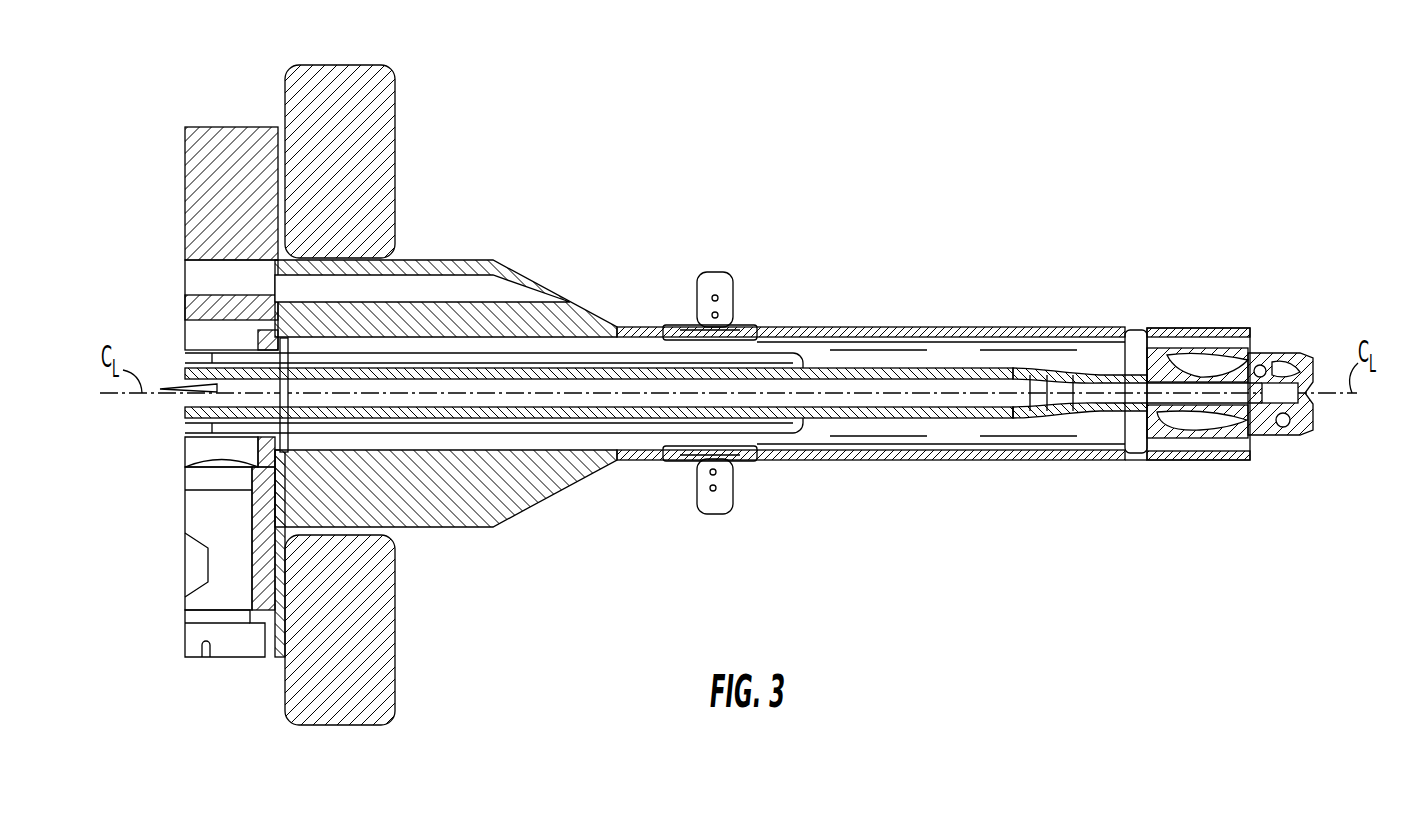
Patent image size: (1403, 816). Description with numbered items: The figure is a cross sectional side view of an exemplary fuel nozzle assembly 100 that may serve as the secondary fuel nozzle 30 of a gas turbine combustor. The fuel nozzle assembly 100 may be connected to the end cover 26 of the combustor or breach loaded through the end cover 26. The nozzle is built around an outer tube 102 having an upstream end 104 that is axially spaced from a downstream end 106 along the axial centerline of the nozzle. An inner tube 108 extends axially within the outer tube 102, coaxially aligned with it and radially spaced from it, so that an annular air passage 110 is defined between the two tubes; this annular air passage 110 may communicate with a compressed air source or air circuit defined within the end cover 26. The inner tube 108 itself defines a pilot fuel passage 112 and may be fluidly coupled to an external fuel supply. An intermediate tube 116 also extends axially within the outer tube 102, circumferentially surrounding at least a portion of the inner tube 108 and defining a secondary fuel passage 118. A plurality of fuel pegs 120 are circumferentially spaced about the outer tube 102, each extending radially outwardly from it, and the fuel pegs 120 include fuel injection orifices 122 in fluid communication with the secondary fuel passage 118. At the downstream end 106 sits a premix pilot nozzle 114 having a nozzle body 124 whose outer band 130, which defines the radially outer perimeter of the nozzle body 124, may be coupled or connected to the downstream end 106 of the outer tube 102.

The end cover 26 is at (370, 82).
The secondary fuel nozzle 30 is at (1092, 258).
The fuel nozzle assembly 100 is at (1053, 213).
The outer tube 102 is at (877, 327).
The upstream end 104 is at (400, 255).
The downstream end 106 is at (1122, 468).
The inner tube 108 is at (1010, 412).
The annular air passage 110 is at (965, 366).
The pilot fuel passage 112 is at (882, 403).
The premix pilot nozzle 114 is at (1187, 300).
The intermediate tube 116 is at (582, 355).
The secondary fuel passage 118 is at (548, 355).
The fuel pegs 120 is at (713, 272).
The fuel injection orifices 122 is at (718, 315).
The nozzle body 124 is at (1237, 326).
The outer band 130 is at (1133, 460).